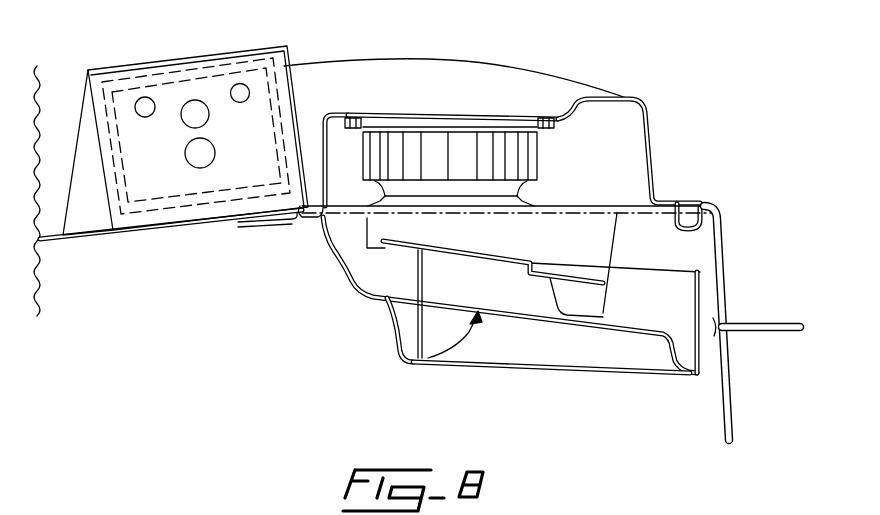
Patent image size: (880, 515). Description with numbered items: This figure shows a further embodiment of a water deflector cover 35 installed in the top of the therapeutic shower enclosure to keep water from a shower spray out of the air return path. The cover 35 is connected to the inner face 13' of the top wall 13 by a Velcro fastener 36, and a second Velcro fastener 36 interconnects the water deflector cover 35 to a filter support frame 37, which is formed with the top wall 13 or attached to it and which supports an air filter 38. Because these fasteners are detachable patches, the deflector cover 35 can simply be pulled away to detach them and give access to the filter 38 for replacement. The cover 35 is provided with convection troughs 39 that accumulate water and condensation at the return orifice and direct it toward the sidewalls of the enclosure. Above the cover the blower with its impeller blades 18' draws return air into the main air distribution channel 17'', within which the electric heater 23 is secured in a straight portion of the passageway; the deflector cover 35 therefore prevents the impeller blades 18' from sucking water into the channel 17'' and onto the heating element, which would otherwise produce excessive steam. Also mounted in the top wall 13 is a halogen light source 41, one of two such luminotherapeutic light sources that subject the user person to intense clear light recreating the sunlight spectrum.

The top wall 13 is at (522, 152).
The inner face of the top wall 13' is at (717, 193).
The main air distribution channel 17'' is at (458, 57).
The impeller blades 18' is at (494, 122).
The electric heater 23 is at (253, 123).
The water deflector cover 35 is at (428, 360).
The Velcro fastener 36 is at (320, 222).
The filter support frame 37 is at (617, 247).
The air filter 38 is at (455, 260).
The convection troughs 39 is at (412, 347).
The halogen light source 41 is at (583, 322).